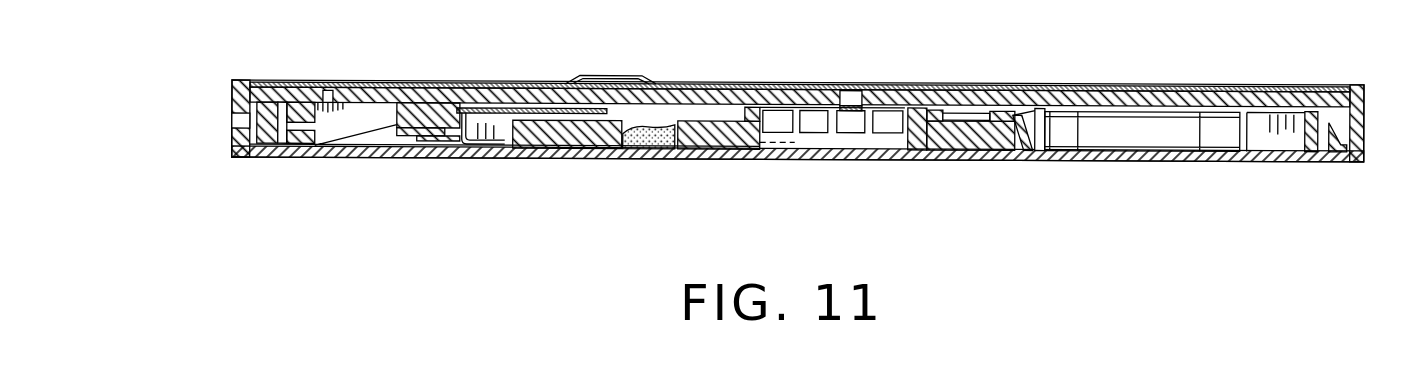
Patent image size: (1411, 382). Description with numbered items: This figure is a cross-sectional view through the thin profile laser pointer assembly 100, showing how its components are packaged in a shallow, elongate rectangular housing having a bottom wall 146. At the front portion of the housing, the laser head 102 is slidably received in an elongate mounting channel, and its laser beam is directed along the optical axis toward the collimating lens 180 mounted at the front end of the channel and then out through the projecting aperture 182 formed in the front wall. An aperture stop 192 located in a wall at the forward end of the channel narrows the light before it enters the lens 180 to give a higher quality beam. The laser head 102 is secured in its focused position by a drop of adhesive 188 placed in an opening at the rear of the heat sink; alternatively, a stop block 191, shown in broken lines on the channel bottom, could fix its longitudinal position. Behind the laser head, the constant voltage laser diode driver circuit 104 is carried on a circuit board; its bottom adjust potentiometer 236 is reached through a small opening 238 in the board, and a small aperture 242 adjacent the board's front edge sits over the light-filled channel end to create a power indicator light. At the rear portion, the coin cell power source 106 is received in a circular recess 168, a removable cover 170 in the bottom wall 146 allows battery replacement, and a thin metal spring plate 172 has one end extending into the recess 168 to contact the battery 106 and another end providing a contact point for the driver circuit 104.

The laser pointer assembly 100 is at (1218, 172).
The laser head 102 is at (553, 152).
The constant voltage laser diode driver circuit 104 is at (907, 152).
The coin cell power source 106 is at (1158, 116).
The bottom wall 146 is at (689, 160).
The circular recess 168 is at (1040, 163).
The removable cover 170 is at (1258, 160).
The spring plate 172 is at (1025, 118).
The collimating lens 180 is at (277, 145).
The projecting aperture 182 is at (230, 124).
The adhesive 188 is at (648, 148).
The stop block 191 is at (812, 140).
The aperture stop 192 is at (302, 104).
The potentiometer 236 is at (853, 125).
The small opening 238 is at (850, 90).
The small aperture 242 is at (352, 86).